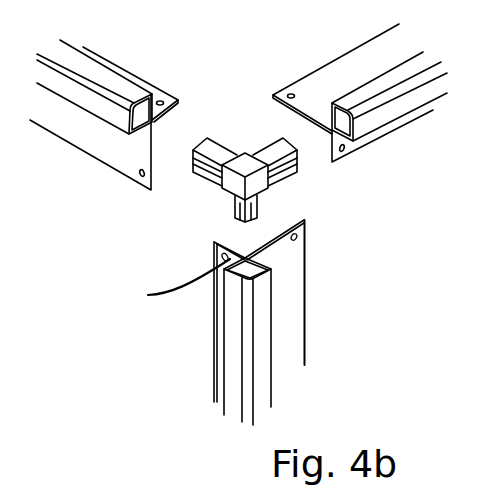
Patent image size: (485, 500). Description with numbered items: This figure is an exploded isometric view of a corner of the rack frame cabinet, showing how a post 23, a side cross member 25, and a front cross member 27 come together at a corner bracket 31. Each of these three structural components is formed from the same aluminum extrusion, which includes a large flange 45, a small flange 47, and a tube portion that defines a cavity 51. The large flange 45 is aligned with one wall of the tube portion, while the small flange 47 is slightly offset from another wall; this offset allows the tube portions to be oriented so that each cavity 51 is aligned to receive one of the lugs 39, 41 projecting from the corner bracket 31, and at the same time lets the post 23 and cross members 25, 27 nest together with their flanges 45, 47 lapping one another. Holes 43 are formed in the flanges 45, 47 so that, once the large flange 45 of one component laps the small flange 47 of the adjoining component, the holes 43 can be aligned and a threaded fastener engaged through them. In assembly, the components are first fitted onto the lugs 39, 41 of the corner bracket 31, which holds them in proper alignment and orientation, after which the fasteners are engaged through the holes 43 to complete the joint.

The post 23 is at (207, 369).
The side cross member 25 is at (115, 57).
The front cross member 27 is at (399, 143).
The corner bracket 31 is at (247, 177).
The lug 39 is at (258, 212).
The lug 41 is at (267, 152).
The hole 43 is at (298, 239).
The large flange 45 is at (73, 131).
The small flange 47 is at (153, 92).
The cavity 51 is at (176, 282).